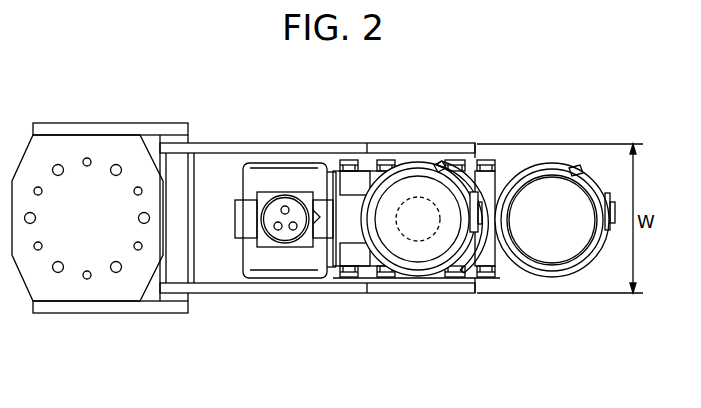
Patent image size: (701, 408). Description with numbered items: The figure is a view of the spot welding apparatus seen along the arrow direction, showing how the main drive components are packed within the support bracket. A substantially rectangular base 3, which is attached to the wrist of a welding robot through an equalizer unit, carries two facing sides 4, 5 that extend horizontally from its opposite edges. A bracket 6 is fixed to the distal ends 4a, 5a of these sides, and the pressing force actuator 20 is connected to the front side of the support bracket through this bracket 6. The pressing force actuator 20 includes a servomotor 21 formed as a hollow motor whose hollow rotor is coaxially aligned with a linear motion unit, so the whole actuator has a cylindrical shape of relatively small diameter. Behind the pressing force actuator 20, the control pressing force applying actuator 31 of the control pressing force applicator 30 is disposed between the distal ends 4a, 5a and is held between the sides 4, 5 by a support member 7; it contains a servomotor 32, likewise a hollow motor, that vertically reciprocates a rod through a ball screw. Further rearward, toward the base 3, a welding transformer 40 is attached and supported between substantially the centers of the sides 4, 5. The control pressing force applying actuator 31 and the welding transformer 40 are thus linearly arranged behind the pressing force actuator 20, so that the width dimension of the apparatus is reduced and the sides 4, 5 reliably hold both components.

The base 3 is at (65, 145).
The side 4 is at (215, 294).
The distal end 4a is at (470, 294).
The side 5 is at (217, 147).
The distal end 5a is at (476, 148).
The bracket 6 is at (474, 232).
The support member 7 is at (400, 278).
The pressing force actuator 20 is at (533, 170).
The servomotor 21 is at (567, 175).
The control pressing force applicator 30 is at (421, 210).
The control pressing force applying actuator 31 is at (435, 182).
The servomotor 32 is at (422, 198).
The welding transformer 40 is at (286, 175).